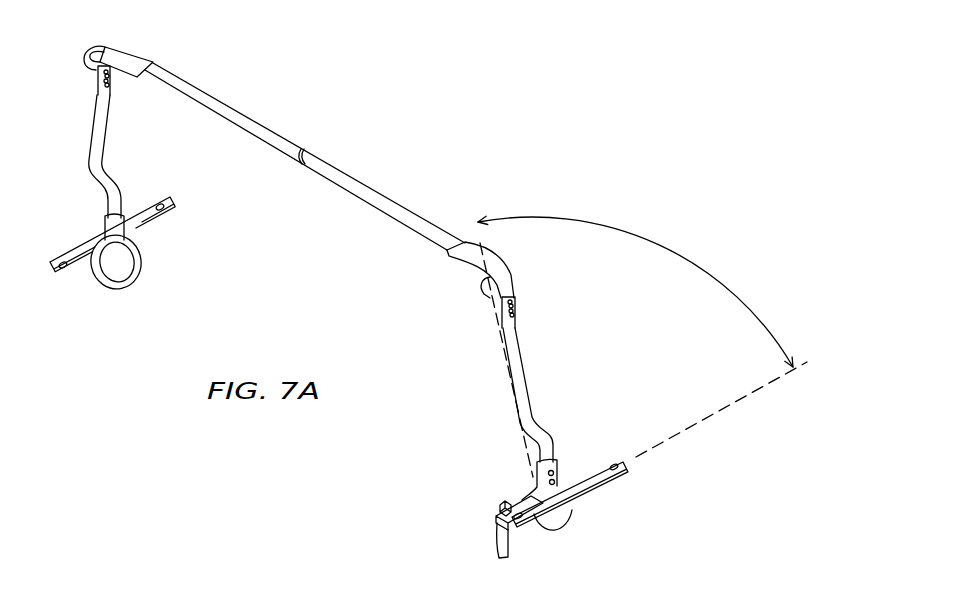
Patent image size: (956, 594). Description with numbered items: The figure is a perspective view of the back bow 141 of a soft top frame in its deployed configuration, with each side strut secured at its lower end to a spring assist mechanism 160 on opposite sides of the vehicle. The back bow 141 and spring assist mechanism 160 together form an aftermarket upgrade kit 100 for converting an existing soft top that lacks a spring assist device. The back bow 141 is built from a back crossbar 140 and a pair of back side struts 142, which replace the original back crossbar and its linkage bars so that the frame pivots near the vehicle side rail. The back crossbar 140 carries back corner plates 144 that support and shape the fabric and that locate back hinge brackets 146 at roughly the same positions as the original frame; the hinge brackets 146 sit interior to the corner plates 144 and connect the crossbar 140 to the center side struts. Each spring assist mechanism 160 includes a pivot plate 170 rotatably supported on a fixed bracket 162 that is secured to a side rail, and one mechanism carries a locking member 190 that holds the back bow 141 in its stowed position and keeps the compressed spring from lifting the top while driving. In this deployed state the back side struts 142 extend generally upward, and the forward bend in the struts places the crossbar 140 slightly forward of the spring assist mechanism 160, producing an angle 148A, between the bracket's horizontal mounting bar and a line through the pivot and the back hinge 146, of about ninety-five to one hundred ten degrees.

The aftermarket upgrade kit 100 is at (515, 93).
The back bow 141 is at (287, 102).
The back crossbar 140 is at (358, 183).
The back corner plates 144 is at (137, 53).
The back hinge brackets 146 is at (97, 82).
The back side struts 142 is at (106, 136).
The pivot plate 170 is at (121, 227).
The spring assist mechanism 160 is at (146, 276).
The bracket 162 is at (84, 247).
The locking member 190 is at (490, 486).
The angle 148A is at (656, 243).